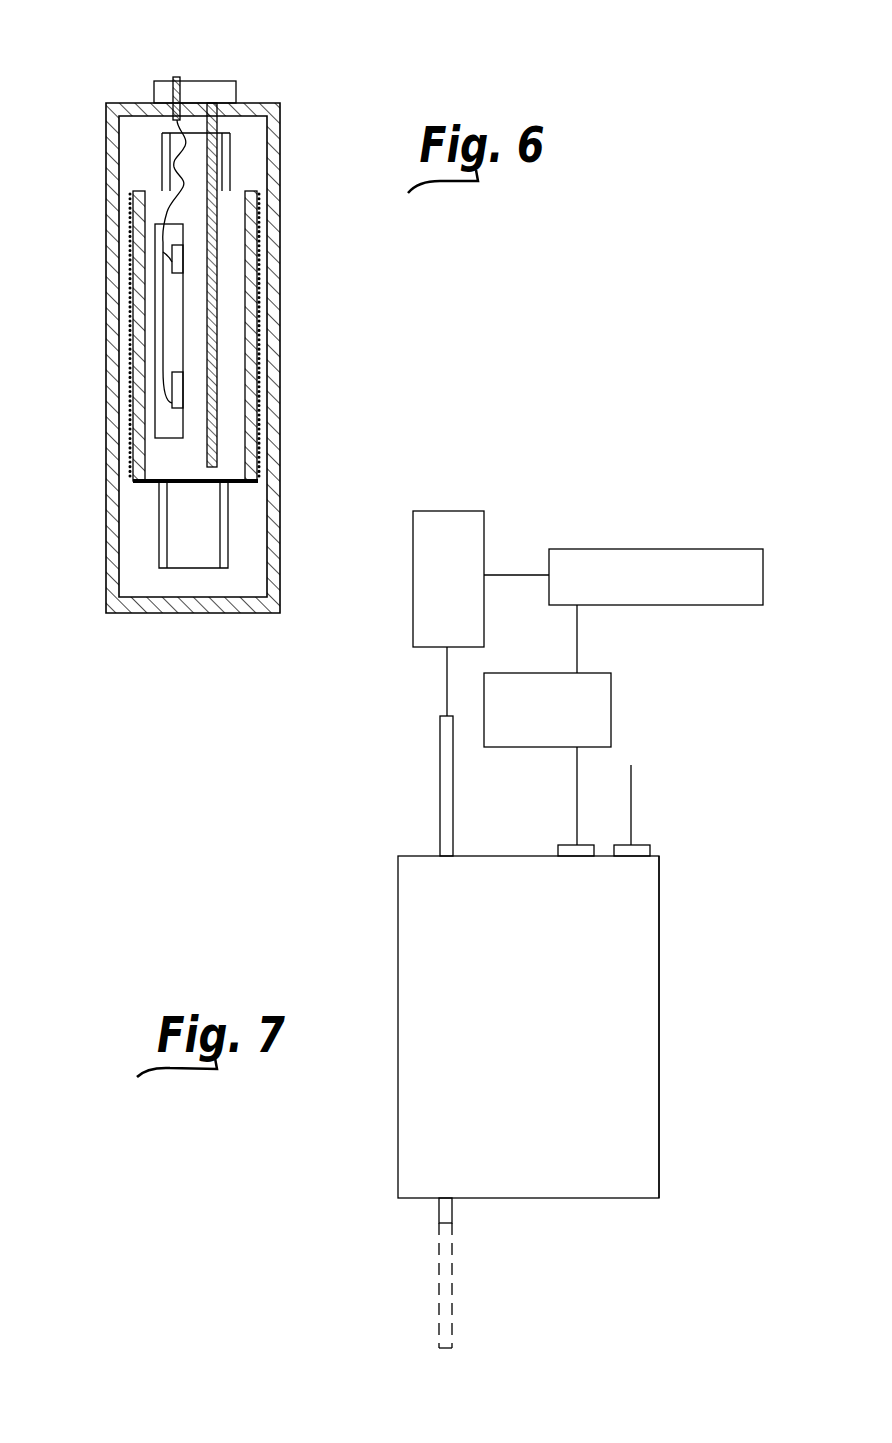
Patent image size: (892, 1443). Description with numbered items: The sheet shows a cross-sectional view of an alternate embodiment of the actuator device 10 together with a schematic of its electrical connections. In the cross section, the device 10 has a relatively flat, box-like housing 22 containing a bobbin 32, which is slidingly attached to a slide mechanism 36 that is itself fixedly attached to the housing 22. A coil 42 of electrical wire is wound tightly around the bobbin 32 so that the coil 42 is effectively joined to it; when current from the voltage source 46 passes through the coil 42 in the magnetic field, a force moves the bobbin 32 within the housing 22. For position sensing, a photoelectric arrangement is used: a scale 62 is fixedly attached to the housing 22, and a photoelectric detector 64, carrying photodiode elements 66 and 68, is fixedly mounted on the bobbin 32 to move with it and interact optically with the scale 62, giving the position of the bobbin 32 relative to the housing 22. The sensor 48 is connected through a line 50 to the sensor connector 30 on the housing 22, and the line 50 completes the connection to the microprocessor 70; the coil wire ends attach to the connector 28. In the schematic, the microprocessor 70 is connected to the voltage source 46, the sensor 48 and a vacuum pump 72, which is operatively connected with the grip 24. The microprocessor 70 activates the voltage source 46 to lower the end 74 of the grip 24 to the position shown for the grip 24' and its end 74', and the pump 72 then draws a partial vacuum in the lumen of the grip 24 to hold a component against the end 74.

In FIG. 7, the actuator device 10 is at (642, 958).
In FIG. 7, the housing 22 is at (643, 1100).
In FIG. 7, the grip 24 is at (400, 751).
In FIG. 7, the grip in lowered position 24' is at (394, 1285).
In FIG. 7, the connector 28 is at (572, 845).
In FIG. 6, the sensor connector 30 is at (237, 90).
In FIG. 7, the sensor connector 30 is at (642, 845).
In FIG. 6, the bobbin 32 is at (163, 464).
In FIG. 6, the slide mechanism 36 is at (178, 547).
In FIG. 6, the coil 42 is at (258, 205).
In FIG. 7, the voltage source 46 is at (611, 678).
In FIG. 7, the sensor 48 is at (410, 947).
In FIG. 6, the line 50 is at (177, 78).
In FIG. 7, the line 50 is at (631, 782).
In FIG. 6, the scale 62 is at (218, 283).
In FIG. 6, the photoelectric detector 64 is at (133, 204).
In FIG. 6, the photodiode element 66 is at (173, 268).
In FIG. 6, the photodiode element 68 is at (177, 407).
In FIG. 7, the microprocessor 70 is at (643, 549).
In FIG. 7, the vacuum pump 72 is at (451, 511).
In FIG. 7, the end of grip 74 is at (394, 1219).
In FIG. 7, the lowered end of grip 74' is at (398, 1346).